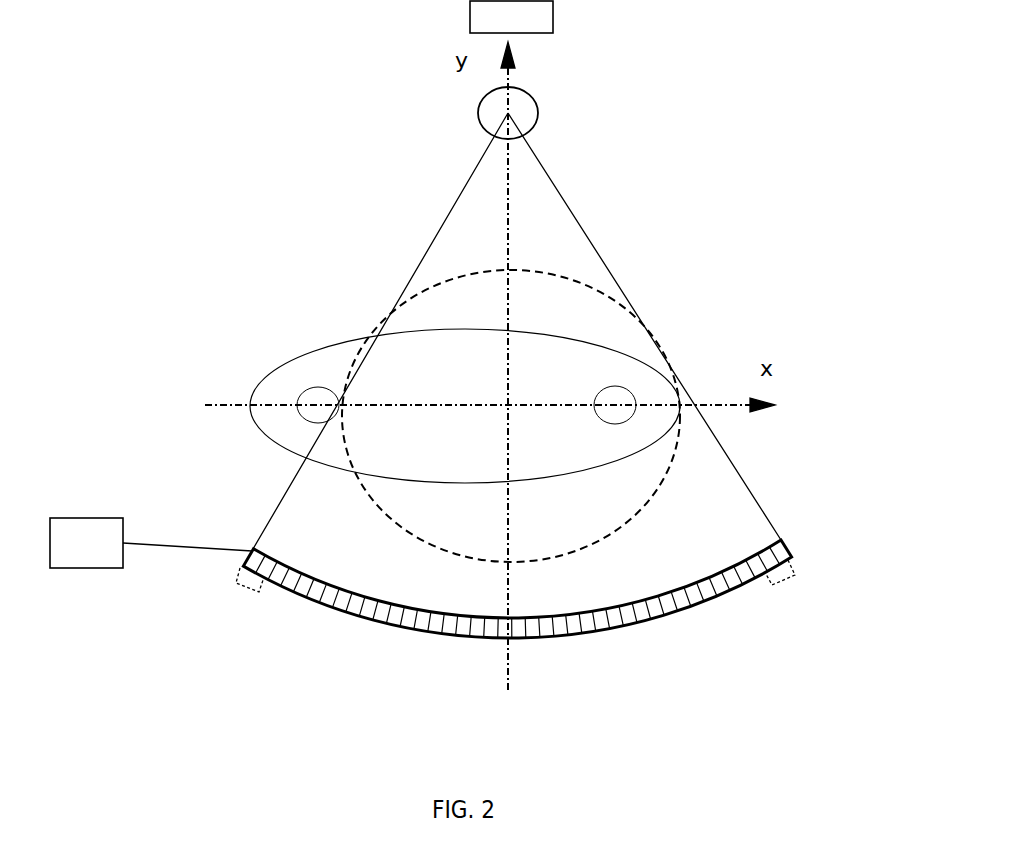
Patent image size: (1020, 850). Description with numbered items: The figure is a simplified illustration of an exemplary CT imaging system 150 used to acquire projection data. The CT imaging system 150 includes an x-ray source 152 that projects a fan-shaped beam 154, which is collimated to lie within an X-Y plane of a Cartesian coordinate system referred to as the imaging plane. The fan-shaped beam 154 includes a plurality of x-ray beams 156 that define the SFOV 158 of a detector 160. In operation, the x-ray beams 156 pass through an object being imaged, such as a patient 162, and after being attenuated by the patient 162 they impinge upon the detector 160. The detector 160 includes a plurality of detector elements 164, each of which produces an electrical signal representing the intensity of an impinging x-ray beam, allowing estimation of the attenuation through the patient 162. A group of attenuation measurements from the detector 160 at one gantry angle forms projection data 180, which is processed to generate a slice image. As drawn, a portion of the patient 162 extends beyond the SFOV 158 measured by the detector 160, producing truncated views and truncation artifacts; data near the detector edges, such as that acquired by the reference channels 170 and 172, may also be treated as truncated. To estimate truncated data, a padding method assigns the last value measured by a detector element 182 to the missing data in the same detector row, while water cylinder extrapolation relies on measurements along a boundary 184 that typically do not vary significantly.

The CT imaging system 150 is at (792, 118).
The x-ray source 152 is at (553, 14).
The fan-shaped beam 154 is at (535, 100).
The x-ray beams 156 is at (563, 173).
The SFOV 158 is at (617, 297).
The detector 160 is at (522, 479).
The patient 162 is at (414, 335).
The detector elements 164 is at (271, 378).
The reference channel 170 is at (246, 592).
The reference channel 172 is at (790, 582).
The projection data 180 is at (86, 543).
The detector element 182 is at (245, 565).
The boundary 184 is at (267, 437).